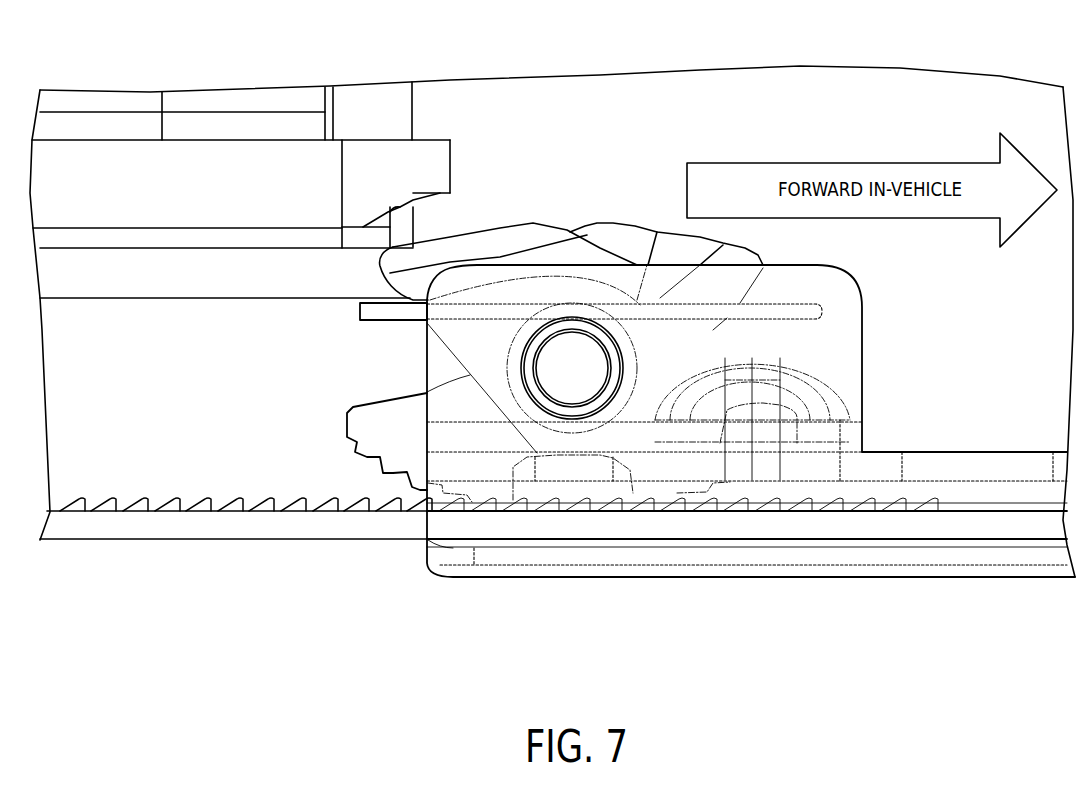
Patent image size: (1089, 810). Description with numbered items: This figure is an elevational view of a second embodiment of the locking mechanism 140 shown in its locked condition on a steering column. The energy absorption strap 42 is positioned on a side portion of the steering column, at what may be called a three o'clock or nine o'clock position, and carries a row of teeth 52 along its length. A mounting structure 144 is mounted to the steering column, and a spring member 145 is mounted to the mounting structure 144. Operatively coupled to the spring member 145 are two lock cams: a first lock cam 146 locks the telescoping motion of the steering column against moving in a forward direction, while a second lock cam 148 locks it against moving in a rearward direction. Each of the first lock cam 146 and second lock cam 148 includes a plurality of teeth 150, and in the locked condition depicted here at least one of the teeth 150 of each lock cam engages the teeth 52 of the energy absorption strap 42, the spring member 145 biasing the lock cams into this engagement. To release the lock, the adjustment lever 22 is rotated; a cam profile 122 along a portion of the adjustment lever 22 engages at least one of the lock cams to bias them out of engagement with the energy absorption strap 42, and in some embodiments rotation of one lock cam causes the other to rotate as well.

The adjustment lever 22 is at (220, 125).
The energy absorption strap 42 is at (243, 528).
The teeth 52 is at (167, 512).
The cam profile 122 is at (397, 196).
The locking mechanism 140 is at (565, 196).
The mounting structure 144 is at (843, 353).
The spring member 145 is at (628, 310).
The first lock cam 146 is at (628, 242).
The second lock cam 148 is at (775, 431).
The teeth 150 is at (395, 462).